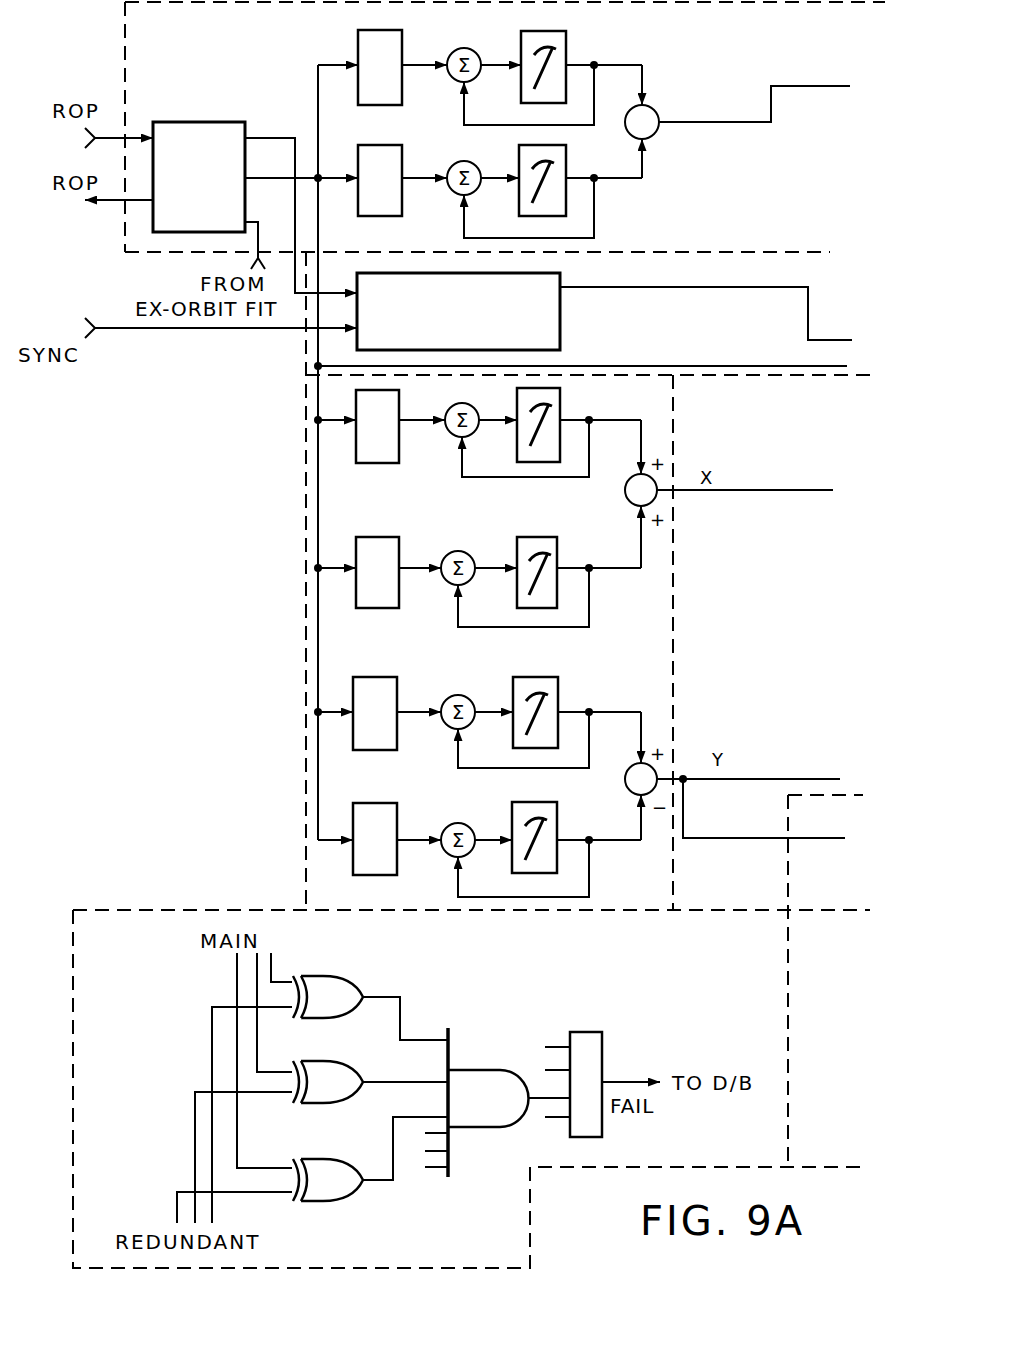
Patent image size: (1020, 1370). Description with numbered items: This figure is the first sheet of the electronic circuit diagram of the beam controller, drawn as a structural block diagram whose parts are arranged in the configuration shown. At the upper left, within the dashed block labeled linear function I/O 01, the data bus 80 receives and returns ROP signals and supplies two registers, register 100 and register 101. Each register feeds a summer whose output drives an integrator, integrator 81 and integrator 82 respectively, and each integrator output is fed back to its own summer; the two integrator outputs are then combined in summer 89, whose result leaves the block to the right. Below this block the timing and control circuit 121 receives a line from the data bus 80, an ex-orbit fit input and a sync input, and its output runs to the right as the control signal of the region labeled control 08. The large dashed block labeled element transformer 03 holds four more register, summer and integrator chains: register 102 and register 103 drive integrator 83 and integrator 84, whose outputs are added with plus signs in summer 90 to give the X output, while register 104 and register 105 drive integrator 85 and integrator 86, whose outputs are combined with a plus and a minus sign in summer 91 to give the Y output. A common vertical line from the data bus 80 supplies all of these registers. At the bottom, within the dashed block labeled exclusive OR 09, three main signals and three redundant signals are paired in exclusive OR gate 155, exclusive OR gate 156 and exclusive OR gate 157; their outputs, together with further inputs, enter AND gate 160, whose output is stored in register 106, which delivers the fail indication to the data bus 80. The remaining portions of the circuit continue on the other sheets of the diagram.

The linear function I/O 01 is at (505, 127).
The element transformer 03 is at (467, 508).
The timing and control 08 is at (706, 316).
The exclusive OR 09 is at (470, 1089).
The data bus 80 is at (228, 122).
The integrator 81 is at (566, 42).
The integrator 82 is at (566, 170).
The integrator 83 is at (560, 398).
The integrator 84 is at (557, 596).
The integrator 85 is at (558, 690).
The integrator 86 is at (557, 822).
The summer 89 is at (654, 108).
The summer 90 is at (660, 475).
The summer 91 is at (662, 765).
The register 100 is at (385, 30).
The register 101 is at (402, 162).
The register 102 is at (399, 408).
The register 103 is at (362, 608).
The register 104 is at (385, 677).
The register 105 is at (390, 803).
The register 106 is at (602, 1040).
The timing and control circuit 121 is at (560, 335).
The exclusive OR gate 155 is at (325, 975).
The exclusive OR gate 156 is at (325, 1062).
The exclusive OR gate 157 is at (322, 1159).
The AND gate 160 is at (497, 1065).